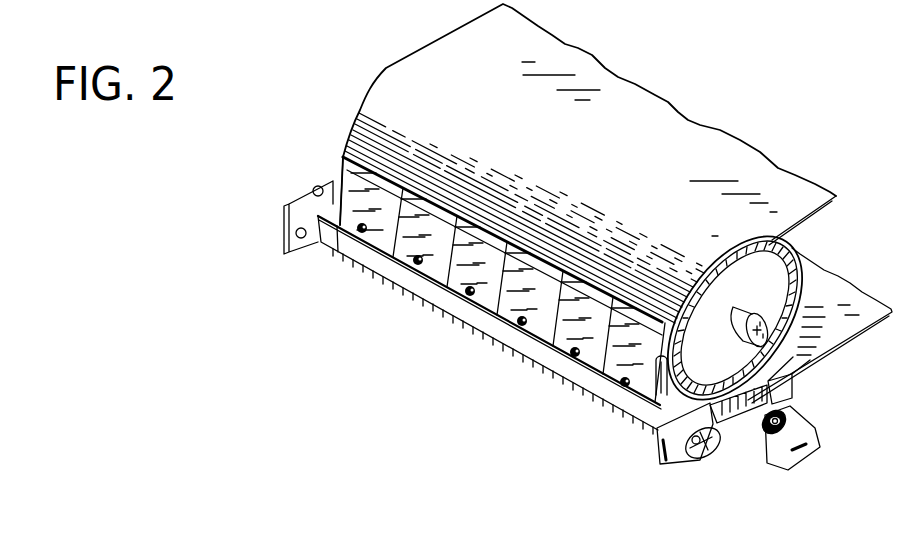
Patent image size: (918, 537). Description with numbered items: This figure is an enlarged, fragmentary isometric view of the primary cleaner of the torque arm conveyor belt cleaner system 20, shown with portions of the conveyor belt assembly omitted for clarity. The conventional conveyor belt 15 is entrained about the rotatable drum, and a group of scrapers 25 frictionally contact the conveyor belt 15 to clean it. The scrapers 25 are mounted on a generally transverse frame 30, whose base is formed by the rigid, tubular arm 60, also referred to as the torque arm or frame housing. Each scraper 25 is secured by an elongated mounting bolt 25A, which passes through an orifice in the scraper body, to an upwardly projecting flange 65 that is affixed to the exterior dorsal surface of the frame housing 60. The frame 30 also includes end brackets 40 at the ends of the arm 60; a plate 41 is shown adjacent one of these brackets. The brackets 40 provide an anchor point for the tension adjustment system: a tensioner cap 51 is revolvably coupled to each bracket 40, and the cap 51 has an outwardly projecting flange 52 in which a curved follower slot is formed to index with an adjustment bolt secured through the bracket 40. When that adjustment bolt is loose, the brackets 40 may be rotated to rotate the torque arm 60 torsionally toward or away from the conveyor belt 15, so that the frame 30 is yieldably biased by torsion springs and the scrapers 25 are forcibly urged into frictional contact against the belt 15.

The conveyor belt 15 is at (375, 117).
The torque arm conveyor belt cleaner system 20 is at (486, 427).
The frame 30 is at (474, 295).
The scraper 25 is at (590, 297).
The mounting bolt 25A is at (522, 318).
The tubular arm 60 is at (437, 295).
The upwardly projecting flange 65 is at (657, 395).
The end bracket 40 is at (657, 430).
The bracket plate 41 is at (805, 402).
The tensioner cap 51 is at (670, 463).
The outwardly projecting flange 52 is at (687, 462).